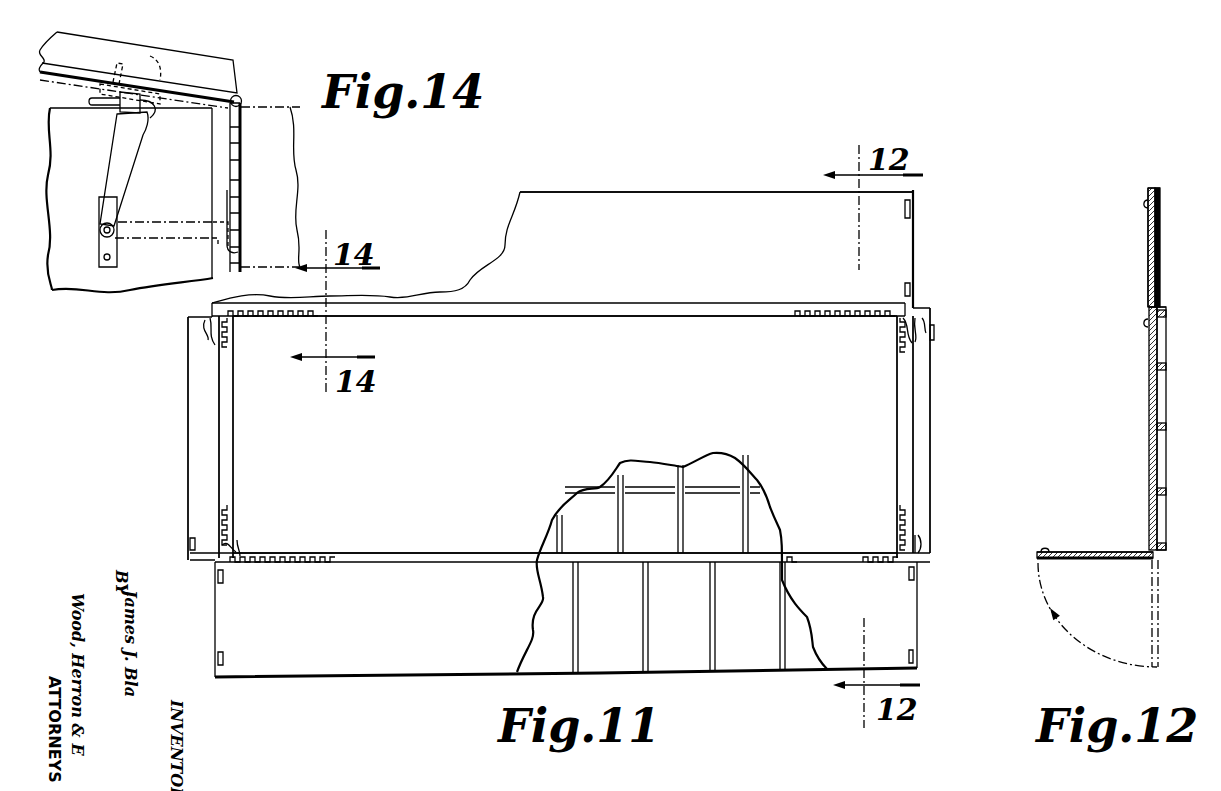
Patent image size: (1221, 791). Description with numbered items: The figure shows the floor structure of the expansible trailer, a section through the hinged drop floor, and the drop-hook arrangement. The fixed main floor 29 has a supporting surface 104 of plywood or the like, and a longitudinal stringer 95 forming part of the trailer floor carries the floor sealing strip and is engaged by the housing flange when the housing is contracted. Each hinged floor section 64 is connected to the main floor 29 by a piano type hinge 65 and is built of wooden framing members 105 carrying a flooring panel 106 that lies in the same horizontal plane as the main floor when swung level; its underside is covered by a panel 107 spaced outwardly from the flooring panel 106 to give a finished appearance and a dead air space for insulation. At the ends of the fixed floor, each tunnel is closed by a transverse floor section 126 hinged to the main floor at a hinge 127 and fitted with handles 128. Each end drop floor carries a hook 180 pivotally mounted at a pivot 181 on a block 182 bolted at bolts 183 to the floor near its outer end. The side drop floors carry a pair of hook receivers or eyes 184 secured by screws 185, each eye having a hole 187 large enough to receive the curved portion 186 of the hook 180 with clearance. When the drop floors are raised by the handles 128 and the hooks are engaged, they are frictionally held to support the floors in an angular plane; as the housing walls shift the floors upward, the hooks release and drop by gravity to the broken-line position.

In FIG. 11, the main floor 29 is at (485, 355).
In FIG. 14, the main floor 29 is at (298, 164).
In FIG. 12, the main floor 29 is at (1147, 397).
In FIG. 11, the hinged floor section 64 is at (745, 213).
In FIG. 14, the hinged floor section 64 is at (215, 70).
In FIG. 12, the hinged floor section 64 is at (1147, 233).
In FIG. 11, the piano type hinge 65 is at (418, 302).
In FIG. 14, the piano type hinge 65 is at (242, 98).
In FIG. 11, the longitudinal stringer 95 is at (624, 526).
In FIG. 12, the longitudinal stringer 95 is at (1165, 323).
In FIG. 11, the supporting surface 104 is at (565, 434).
In FIG. 12, the supporting surface 104 is at (1150, 355).
In FIG. 11, the framing member 105 is at (592, 565).
In FIG. 12, the framing member 105 is at (1160, 200).
In FIG. 11, the flooring panel 106 is at (655, 205).
In FIG. 14, the flooring panel 106 is at (175, 87).
In FIG. 12, the flooring panel 106 is at (1148, 262).
In FIG. 12, the panel 107 is at (1161, 272).
In FIG. 11, the transverse floor section 126 is at (190, 388).
In FIG. 14, the transverse floor section 126 is at (241, 160).
In FIG. 11, the hinge 127 is at (228, 412).
In FIG. 14, the hinge 127 is at (231, 190).
In FIG. 11, the handle 128 is at (188, 546).
In FIG. 12, the handle 128 is at (1147, 204).
In FIG. 11, the hook 180 is at (205, 325).
In FIG. 14, the hook 180 is at (113, 168).
In FIG. 14, the pivot 181 is at (100, 230).
In FIG. 14, the block 182 is at (117, 261).
In FIG. 14, the bolt 183 is at (104, 257).
In FIG. 11, the hook receiver 184 is at (224, 578).
In FIG. 14, the hook receiver 184 is at (152, 110).
In FIG. 14, the screw 185 is at (153, 60).
In FIG. 11, the curved portion 186 is at (932, 548).
In FIG. 14, the curved portion 186 is at (103, 106).
In FIG. 14, the hole 187 is at (108, 94).